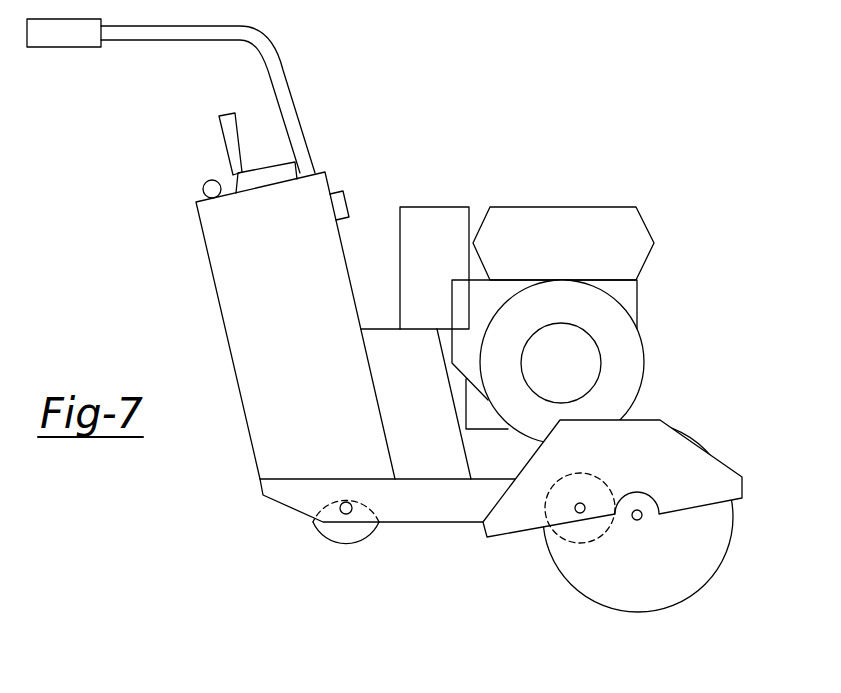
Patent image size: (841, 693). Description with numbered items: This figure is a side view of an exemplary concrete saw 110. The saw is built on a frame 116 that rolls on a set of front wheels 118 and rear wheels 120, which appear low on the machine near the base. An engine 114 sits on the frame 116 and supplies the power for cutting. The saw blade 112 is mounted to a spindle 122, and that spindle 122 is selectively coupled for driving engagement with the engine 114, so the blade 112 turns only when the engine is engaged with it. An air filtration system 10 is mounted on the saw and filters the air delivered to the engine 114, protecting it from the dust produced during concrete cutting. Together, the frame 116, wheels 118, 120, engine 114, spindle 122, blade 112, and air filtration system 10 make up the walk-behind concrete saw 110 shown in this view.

The air filtration system 10 is at (436, 220).
The concrete saw 110 is at (572, 128).
The blade 112 is at (705, 580).
The engine 114 is at (627, 367).
The frame 116 is at (432, 503).
The front wheels 118 is at (580, 545).
The rear wheels 120 is at (342, 545).
The spindle 122 is at (637, 520).